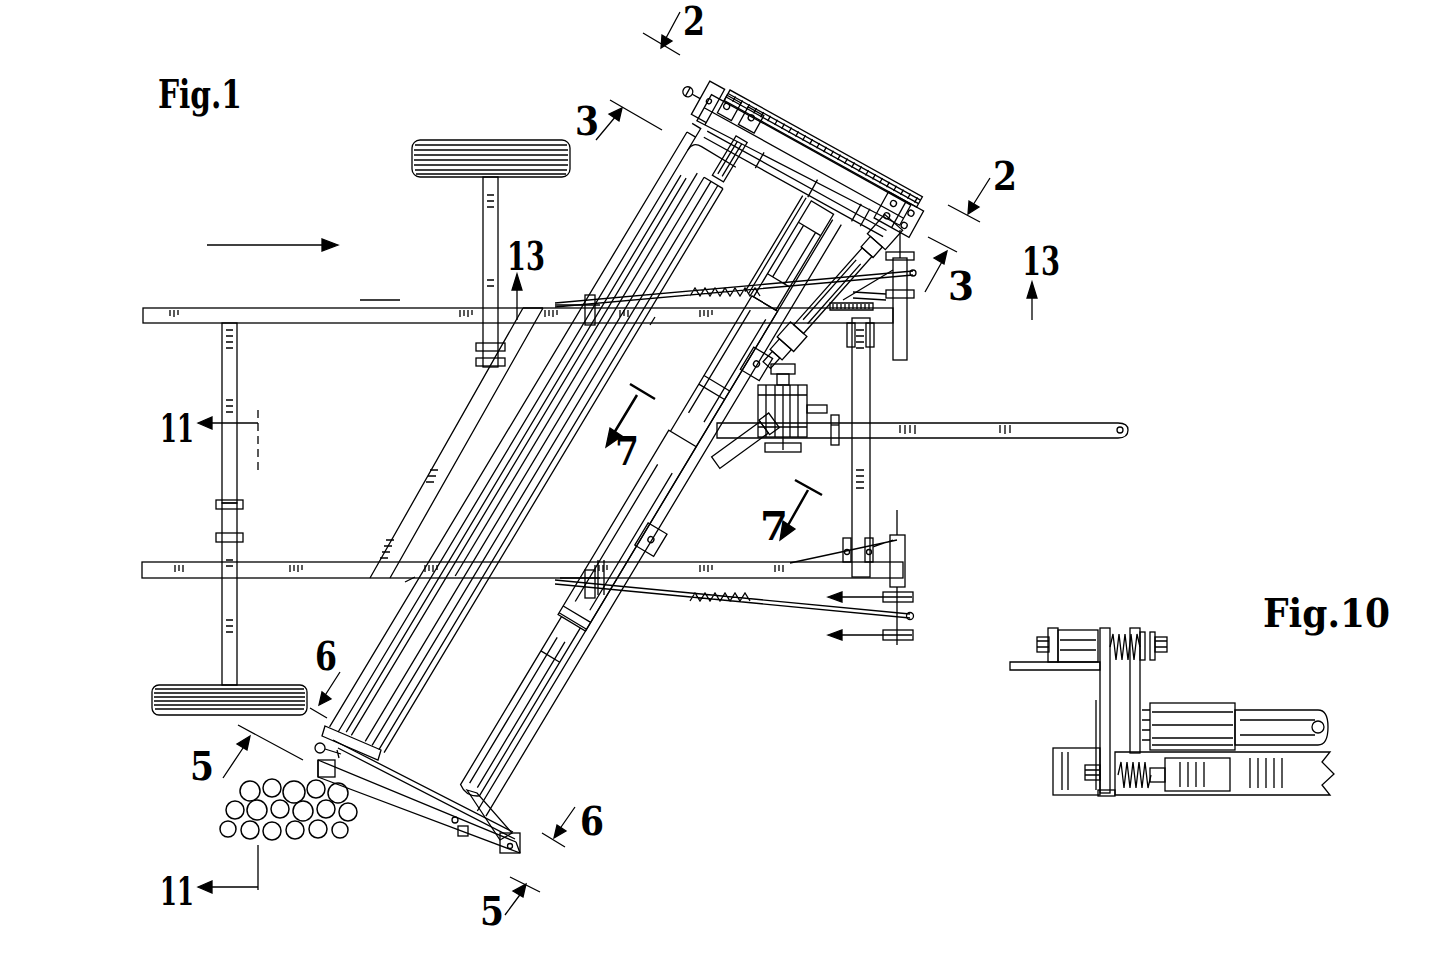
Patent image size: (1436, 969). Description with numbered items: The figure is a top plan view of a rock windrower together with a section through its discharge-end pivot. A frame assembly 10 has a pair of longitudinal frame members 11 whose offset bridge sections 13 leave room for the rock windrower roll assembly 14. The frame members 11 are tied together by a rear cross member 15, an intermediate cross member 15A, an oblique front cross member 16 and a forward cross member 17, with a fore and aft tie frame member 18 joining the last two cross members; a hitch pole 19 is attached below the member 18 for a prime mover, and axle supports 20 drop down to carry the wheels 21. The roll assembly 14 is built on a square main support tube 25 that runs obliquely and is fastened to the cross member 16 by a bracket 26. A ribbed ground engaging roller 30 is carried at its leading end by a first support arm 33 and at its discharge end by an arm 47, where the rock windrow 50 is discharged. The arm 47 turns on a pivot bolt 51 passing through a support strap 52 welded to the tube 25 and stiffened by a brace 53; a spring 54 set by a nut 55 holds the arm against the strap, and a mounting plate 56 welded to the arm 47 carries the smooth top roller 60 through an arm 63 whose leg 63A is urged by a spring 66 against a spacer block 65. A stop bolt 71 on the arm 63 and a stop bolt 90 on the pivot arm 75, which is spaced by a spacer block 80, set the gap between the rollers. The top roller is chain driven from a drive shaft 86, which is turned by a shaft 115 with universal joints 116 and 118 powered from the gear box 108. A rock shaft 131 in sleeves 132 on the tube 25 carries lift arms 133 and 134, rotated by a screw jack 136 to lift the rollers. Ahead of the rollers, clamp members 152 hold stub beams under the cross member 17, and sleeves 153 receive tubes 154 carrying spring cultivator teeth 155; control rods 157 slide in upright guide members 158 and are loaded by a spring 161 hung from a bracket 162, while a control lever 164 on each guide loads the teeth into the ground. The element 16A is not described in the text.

In FIG. 1, the frame assembly 10 is at (365, 306).
In FIG. 1, the frame members 11 is at (362, 325).
In FIG. 1, the offset bridge sections 13 is at (405, 582).
In FIG. 1, the rock windrower roll assembly 14 is at (640, 205).
In FIG. 1, the rear cross member 15 is at (222, 372).
In FIG. 1, the intermediate cross member 15A is at (437, 458).
In FIG. 1, the front cross member 16 is at (665, 517).
In FIG. 1, the frame member 16A is at (600, 322).
In FIG. 1, the forward cross member 17 is at (870, 412).
In FIG. 1, the tie frame member 18 is at (836, 414).
In FIG. 1, the hitch pole 19 is at (1025, 422).
In FIG. 1, the axle supports 20 is at (483, 210).
In FIG. 1, the wheels 21 is at (470, 140).
In FIG. 1, the main support tube 25 is at (545, 680).
In FIG. 10, the main support tube 25 is at (1270, 790).
In FIG. 1, the bracket 26 is at (745, 352).
In FIG. 1, the ground engaging roller 30 is at (682, 130).
In FIG. 1, the first support arm 33 is at (782, 112).
In FIG. 1, the arm 47 is at (421, 832).
In FIG. 10, the arm 47 is at (1072, 750).
In FIG. 1, the rock windrow 50 is at (215, 808).
In FIG. 10, the pivot bolt 51 is at (1083, 774).
In FIG. 1, the support strap 52 is at (522, 845).
In FIG. 10, the support strap 52 is at (1108, 798).
In FIG. 1, the brace 53 is at (490, 800).
In FIG. 10, the brace 53 is at (1205, 790).
In FIG. 10, the spring 54 is at (1142, 793).
In FIG. 10, the nut 55 is at (1160, 786).
In FIG. 10, the mounting plate 56 is at (1098, 686).
In FIG. 1, the top roller 60 is at (527, 500).
In FIG. 10, the arm 63 is at (1015, 660).
In FIG. 10, the leg of arm 63A is at (1050, 626).
In FIG. 1, the spacer block 65 is at (466, 838).
In FIG. 10, the spacer block 65 is at (1075, 630).
In FIG. 10, the spring 66 is at (1125, 632).
In FIG. 1, the stop bolt 71 is at (316, 746).
In FIG. 1, the pivot arm 75 is at (815, 142).
In FIG. 1, the spacer block 80 is at (858, 172).
In FIG. 1, the drive shaft 86 is at (915, 186).
In FIG. 1, the stop bolt 90 is at (692, 104).
In FIG. 1, the gear box 108 is at (807, 440).
In FIG. 1, the shaft 115 is at (786, 262).
In FIG. 1, the universal joint 116 is at (898, 235).
In FIG. 1, the universal joint 118 is at (798, 355).
In FIG. 1, the rock shaft 131 is at (550, 676).
In FIG. 10, the rock shaft 131 is at (1272, 715).
In FIG. 1, the sleeves 132 is at (570, 630).
In FIG. 10, the sleeves 132 is at (1192, 704).
In FIG. 1, the lift arm 133 is at (405, 778).
In FIG. 10, the lift arm 133 is at (1140, 680).
In FIG. 1, the lift arm 134 is at (745, 168).
In FIG. 1, the screw jack 136 is at (728, 462).
In FIG. 1, the clamp member 152 is at (715, 385).
In FIG. 1, the sleeves 153 is at (907, 338).
In FIG. 1, the tube 154 is at (914, 616).
In FIG. 1, the spring cultivator teeth 155 is at (862, 640).
In FIG. 1, the control rods 157 is at (754, 292).
In FIG. 1, the upright guide member 158 is at (588, 296).
In FIG. 1, the spring 161 is at (825, 296).
In FIG. 1, the bracket 162 is at (905, 304).
In FIG. 1, the control lever 164 is at (600, 560).